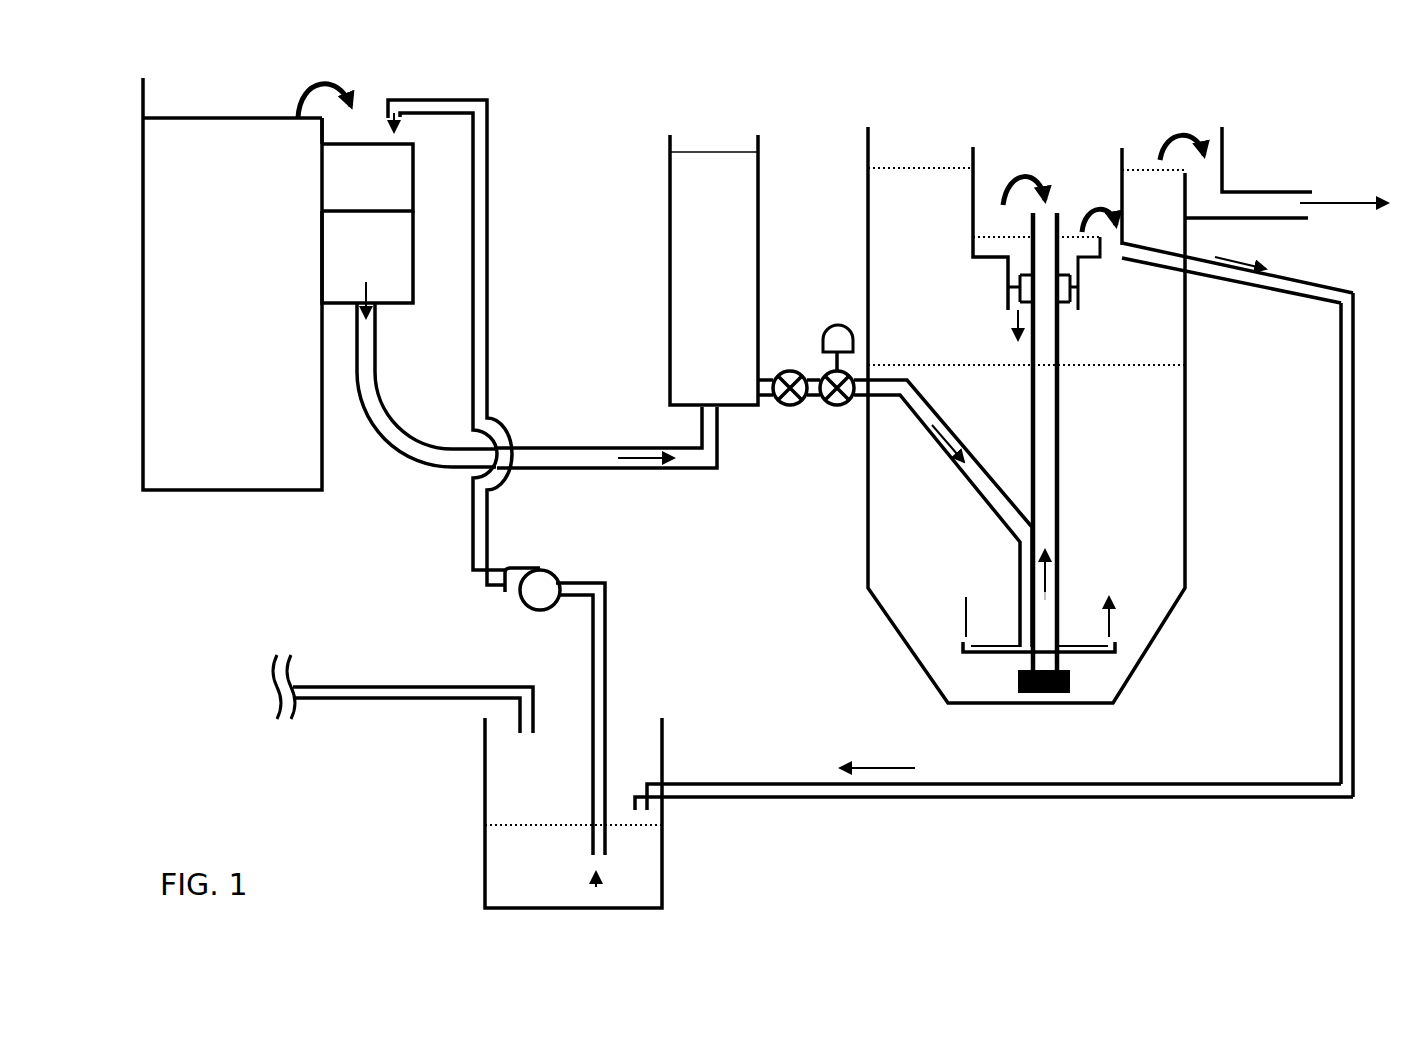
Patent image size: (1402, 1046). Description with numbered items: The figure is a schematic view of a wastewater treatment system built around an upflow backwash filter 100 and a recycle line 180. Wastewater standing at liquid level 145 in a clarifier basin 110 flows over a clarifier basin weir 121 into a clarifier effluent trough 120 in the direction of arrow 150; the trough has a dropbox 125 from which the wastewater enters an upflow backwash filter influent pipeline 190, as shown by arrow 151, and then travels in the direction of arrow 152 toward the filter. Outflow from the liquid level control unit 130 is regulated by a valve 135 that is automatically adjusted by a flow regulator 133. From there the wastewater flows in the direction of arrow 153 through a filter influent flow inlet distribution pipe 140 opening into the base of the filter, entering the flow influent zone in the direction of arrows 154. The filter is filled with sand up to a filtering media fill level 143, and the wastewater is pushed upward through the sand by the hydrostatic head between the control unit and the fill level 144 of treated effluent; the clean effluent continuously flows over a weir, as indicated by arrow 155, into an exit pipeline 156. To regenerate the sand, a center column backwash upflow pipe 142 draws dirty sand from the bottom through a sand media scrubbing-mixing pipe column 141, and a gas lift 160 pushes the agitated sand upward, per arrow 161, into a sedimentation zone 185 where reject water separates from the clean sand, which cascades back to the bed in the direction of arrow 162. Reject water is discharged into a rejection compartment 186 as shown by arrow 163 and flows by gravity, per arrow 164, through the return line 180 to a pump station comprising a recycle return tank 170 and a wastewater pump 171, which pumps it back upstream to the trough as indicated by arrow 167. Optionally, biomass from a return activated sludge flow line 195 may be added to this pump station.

The upflow backwash filter 100 is at (840, 126).
The clarifier basin 110 is at (232, 284).
The clarifier effluent trough 120 is at (367, 177).
The clarifier basin weir 121 is at (322, 130).
The dropbox 125 is at (367, 257).
The liquid level control unit 130 is at (745, 270).
The flow regulator 133 is at (835, 320).
The valve 135 is at (825, 410).
The filter influent flow inlet distribution pipe 140 is at (1093, 655).
The sand media scrubbing-mixing pipe column 141 is at (1065, 693).
The center column backwash upflow pipe 142 is at (1058, 592).
The filtering media fill level 143 is at (1152, 367).
The fill level of treated effluent 144 is at (927, 163).
The liquid level 145 is at (230, 118).
The arrow 150 is at (328, 66).
The arrow 151 is at (367, 295).
The arrow 152 is at (642, 463).
The arrow 153 is at (950, 440).
The arrows 154 is at (1113, 620).
The arrow 155 is at (1178, 148).
The exit pipeline 156 is at (1286, 172).
The gas lift 160 is at (1047, 572).
The arrow 161 is at (1030, 170).
The arrow 162 is at (985, 327).
The arrow 163 is at (1095, 205).
The arrow 164 is at (994, 521).
The arrow 167 is at (400, 117).
The recycle return tank 170 is at (478, 740).
The wastewater pump 171 is at (523, 600).
The recycle line 180 is at (1342, 690).
The sedimentation zone 185 is at (1000, 250).
The rejection compartment 186 is at (1107, 242).
The upflow backwash filter influent pipeline 190 is at (552, 447).
The return activated sludge flow line 195 is at (362, 687).